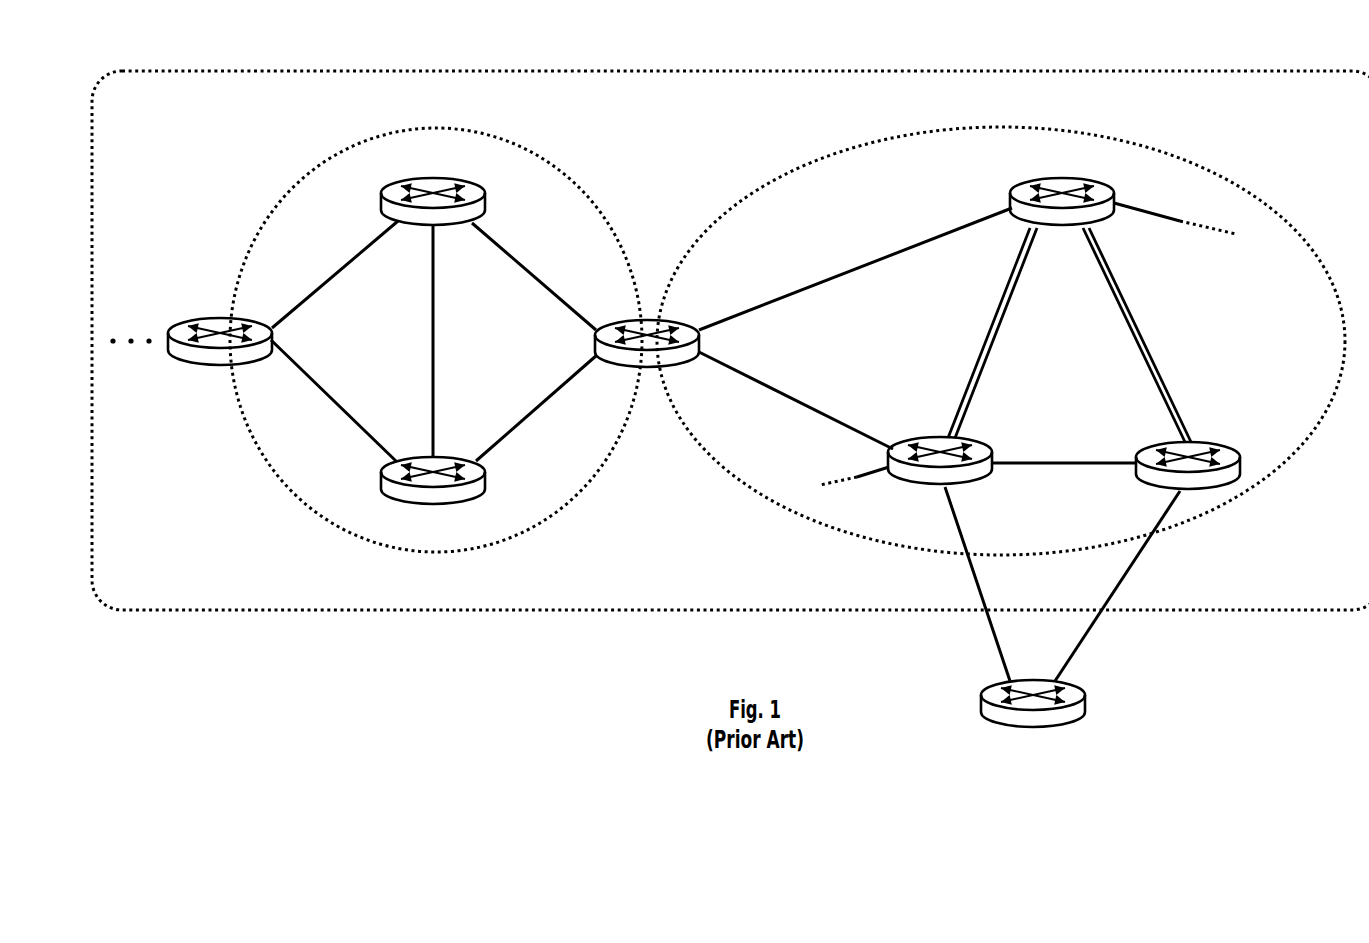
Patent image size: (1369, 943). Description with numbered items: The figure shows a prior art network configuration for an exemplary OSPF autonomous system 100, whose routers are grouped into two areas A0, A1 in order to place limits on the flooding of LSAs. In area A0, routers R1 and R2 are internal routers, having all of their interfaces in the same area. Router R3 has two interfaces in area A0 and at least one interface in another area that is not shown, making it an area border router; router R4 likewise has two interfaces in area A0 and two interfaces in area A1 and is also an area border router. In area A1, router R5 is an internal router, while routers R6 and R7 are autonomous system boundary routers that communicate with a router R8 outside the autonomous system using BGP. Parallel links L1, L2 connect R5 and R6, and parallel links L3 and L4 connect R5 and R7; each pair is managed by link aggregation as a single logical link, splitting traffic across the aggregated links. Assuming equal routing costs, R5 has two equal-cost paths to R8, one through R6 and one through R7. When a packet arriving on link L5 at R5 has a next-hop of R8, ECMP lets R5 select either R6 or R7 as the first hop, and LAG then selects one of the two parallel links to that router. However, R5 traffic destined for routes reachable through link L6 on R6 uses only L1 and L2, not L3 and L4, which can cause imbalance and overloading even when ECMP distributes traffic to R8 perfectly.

The autonomous system 100 is at (224, 70).
The area A0 is at (338, 153).
The area A1 is at (1145, 152).
The router R1 is at (381, 200).
The router R2 is at (421, 458).
The router R3 is at (238, 316).
The router R4 is at (624, 322).
The router R5 is at (1012, 206).
The router R6 is at (930, 437).
The router R7 is at (1176, 442).
The router R8 is at (980, 690).
The link L1 is at (993, 313).
The link L2 is at (990, 362).
The link L3 is at (1143, 332).
The link L4 is at (1140, 355).
The link L5 is at (1176, 222).
The link L6 is at (857, 478).
The element BGP is at (1062, 584).